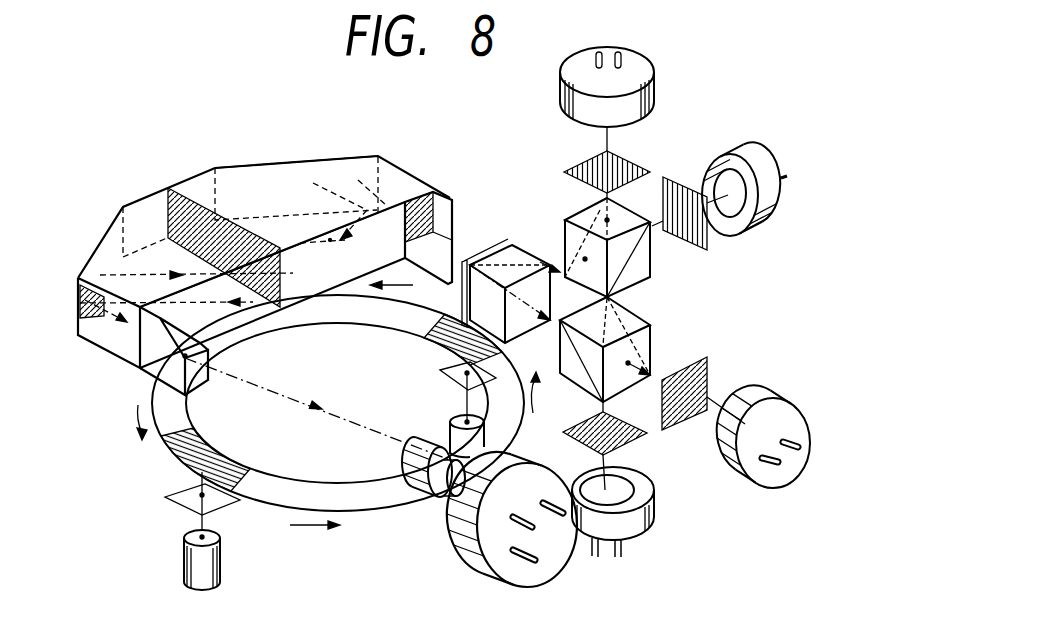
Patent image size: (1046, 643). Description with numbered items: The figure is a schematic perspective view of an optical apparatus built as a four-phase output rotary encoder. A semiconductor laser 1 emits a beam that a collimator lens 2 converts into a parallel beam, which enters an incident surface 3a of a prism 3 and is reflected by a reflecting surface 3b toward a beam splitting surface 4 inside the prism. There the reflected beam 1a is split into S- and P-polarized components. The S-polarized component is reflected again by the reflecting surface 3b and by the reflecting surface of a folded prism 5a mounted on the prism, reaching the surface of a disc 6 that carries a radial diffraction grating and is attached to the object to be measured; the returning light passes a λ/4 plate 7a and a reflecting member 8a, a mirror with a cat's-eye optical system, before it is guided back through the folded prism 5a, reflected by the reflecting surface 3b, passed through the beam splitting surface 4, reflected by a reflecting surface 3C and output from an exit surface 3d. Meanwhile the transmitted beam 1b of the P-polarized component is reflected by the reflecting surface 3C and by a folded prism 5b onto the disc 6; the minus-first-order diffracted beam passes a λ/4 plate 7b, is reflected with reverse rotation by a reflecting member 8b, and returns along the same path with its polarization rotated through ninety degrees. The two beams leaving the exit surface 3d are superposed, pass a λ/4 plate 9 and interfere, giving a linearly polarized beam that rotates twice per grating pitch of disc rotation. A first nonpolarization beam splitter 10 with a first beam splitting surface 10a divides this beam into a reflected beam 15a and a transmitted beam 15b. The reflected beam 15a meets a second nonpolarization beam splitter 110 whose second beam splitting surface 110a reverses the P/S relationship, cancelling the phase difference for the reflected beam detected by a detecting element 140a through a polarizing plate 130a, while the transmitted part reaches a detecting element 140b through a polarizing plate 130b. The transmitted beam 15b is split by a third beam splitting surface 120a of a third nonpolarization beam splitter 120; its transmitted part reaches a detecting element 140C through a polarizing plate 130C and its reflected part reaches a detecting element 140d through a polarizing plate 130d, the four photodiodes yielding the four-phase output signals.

The semiconductor laser 1 is at (458, 534).
The reflected beam 1a is at (316, 407).
The transmitted beam 1b is at (330, 240).
The collimator lens 2 is at (420, 487).
The prism 3 is at (259, 285).
The incident surface 3a is at (255, 323).
The reflecting surface 3b is at (80, 257).
The reflecting surface 3C is at (262, 182).
The exit surface 3d is at (335, 277).
The beam splitting surface 4 is at (188, 210).
The folded prism 5a is at (146, 372).
The folded prism 5b is at (458, 208).
The disc 6 is at (165, 453).
The λ/4 plate 7a is at (172, 498).
The λ/4 plate 7b is at (440, 371).
The reflecting member 8a is at (183, 563).
The reflecting member 8b is at (450, 437).
The λ/4 plate 9 is at (500, 246).
The first nonpolarization beam splitter 10 is at (513, 240).
The first beam splitting surface 10a is at (515, 257).
The reflected beam 15a is at (557, 227).
The transmitted beam 15b is at (552, 395).
The second nonpolarization beam splitter 110 is at (630, 210).
The second beam splitting surface 110a is at (628, 262).
The third nonpolarization beam splitter 120 is at (650, 337).
The third beam splitting surface 120a is at (630, 305).
The polarizing plate 130a is at (632, 158).
The polarizing plate 130b is at (708, 247).
The polarizing plate 130C is at (708, 370).
The polarizing plate 130d is at (633, 443).
The four-phase signal detecting element 140a is at (656, 88).
The four-phase signal detecting element 140b is at (738, 142).
The four-phase signal detecting element 140C is at (763, 492).
The four-phase signal detecting element 140d is at (655, 513).